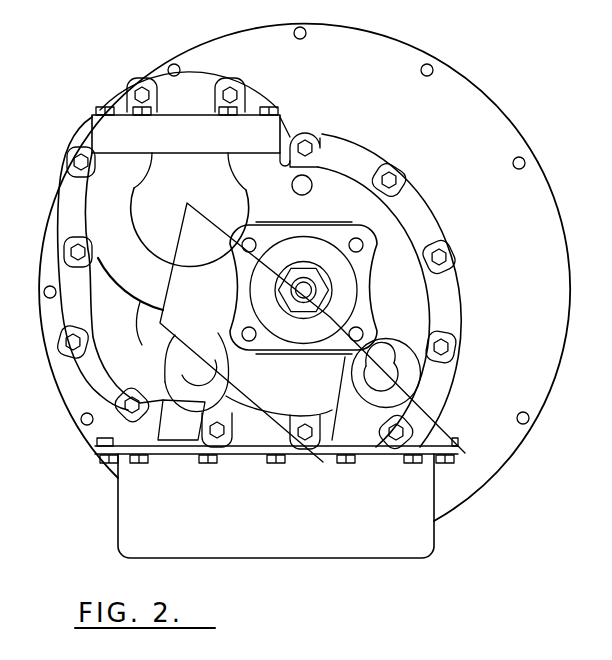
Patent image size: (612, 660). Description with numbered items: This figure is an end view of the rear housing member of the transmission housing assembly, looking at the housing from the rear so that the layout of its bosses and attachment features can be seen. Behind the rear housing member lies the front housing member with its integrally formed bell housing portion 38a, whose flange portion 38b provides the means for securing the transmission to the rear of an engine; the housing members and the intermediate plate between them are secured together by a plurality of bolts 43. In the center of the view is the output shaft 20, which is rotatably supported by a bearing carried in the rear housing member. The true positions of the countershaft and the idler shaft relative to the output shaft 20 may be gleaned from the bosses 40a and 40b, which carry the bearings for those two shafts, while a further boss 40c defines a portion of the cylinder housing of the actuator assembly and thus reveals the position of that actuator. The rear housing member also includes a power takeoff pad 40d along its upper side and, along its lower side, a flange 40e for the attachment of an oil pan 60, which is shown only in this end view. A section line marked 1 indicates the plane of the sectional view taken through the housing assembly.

The output shaft 20 is at (278, 290).
The bell housing portion 38a is at (484, 172).
The flange portion 38b is at (493, 100).
The boss 40a is at (128, 210).
The boss 40b is at (142, 345).
The boss 40c is at (408, 384).
The power takeoff pad 40d is at (284, 126).
The flange 40e is at (90, 457).
The bolts 43 is at (450, 252).
The oil pan 60 is at (118, 520).
The section line 1- 1 is at (486, 439).